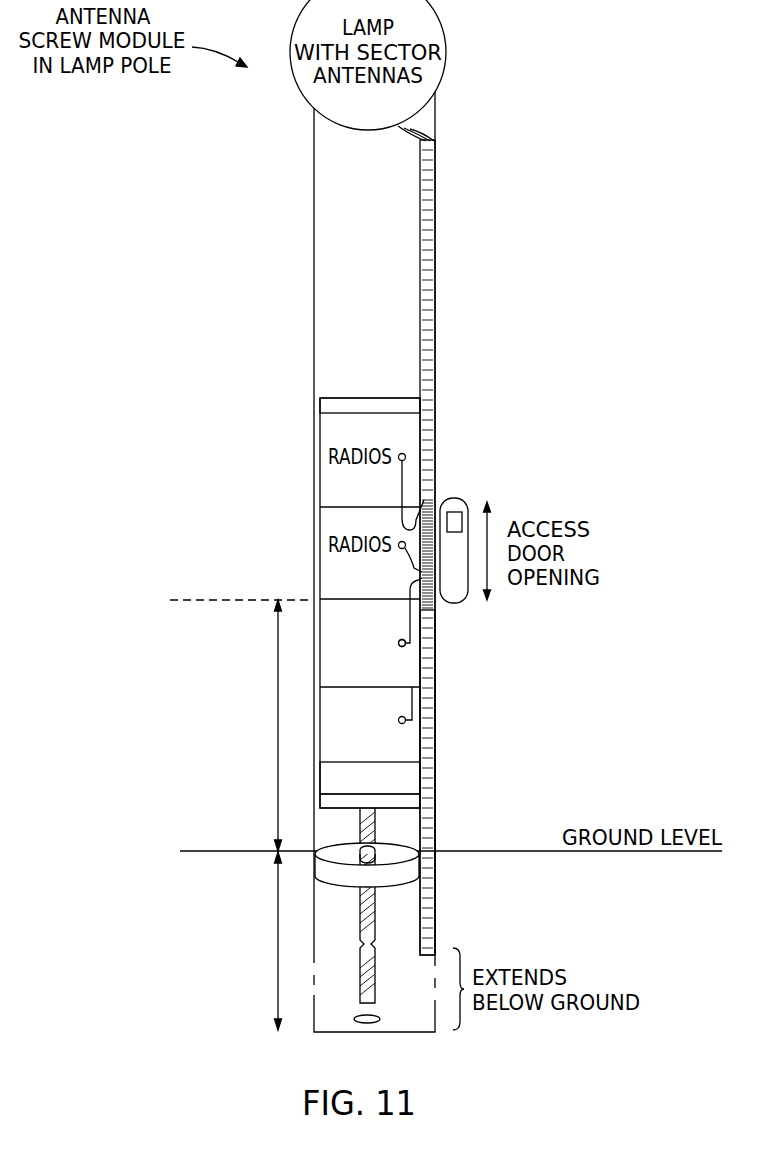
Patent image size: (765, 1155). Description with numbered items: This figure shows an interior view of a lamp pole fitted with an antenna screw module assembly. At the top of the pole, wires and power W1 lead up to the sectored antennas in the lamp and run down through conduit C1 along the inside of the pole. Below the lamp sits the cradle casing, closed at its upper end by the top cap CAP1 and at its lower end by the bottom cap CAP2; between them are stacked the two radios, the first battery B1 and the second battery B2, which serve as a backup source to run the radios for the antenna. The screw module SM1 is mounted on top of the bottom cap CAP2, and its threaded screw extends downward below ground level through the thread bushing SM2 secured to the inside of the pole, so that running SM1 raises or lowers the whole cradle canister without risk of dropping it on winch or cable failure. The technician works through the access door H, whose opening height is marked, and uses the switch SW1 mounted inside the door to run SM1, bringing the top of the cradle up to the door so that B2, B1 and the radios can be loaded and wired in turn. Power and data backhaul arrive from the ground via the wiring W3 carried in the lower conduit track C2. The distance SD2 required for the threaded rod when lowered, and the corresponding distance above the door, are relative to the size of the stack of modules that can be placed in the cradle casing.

The upper conduit C1 is at (434, 540).
The lower conduit C2 is at (446, 782).
The antenna wires W1 is at (430, 500).
The ground access wiring W3 is at (430, 600).
The switch SW1 is at (460, 512).
The first battery B1 is at (384, 643).
The second battery B2 is at (387, 709).
The screw module SM1 is at (370, 778).
The thread bushing SM2 is at (436, 870).
The top cap CAP1 is at (305, 407).
The bottom cap CAP2 is at (305, 800).
The access door H is at (486, 551).
The thread rod lowering distance SD2 is at (272, 815).